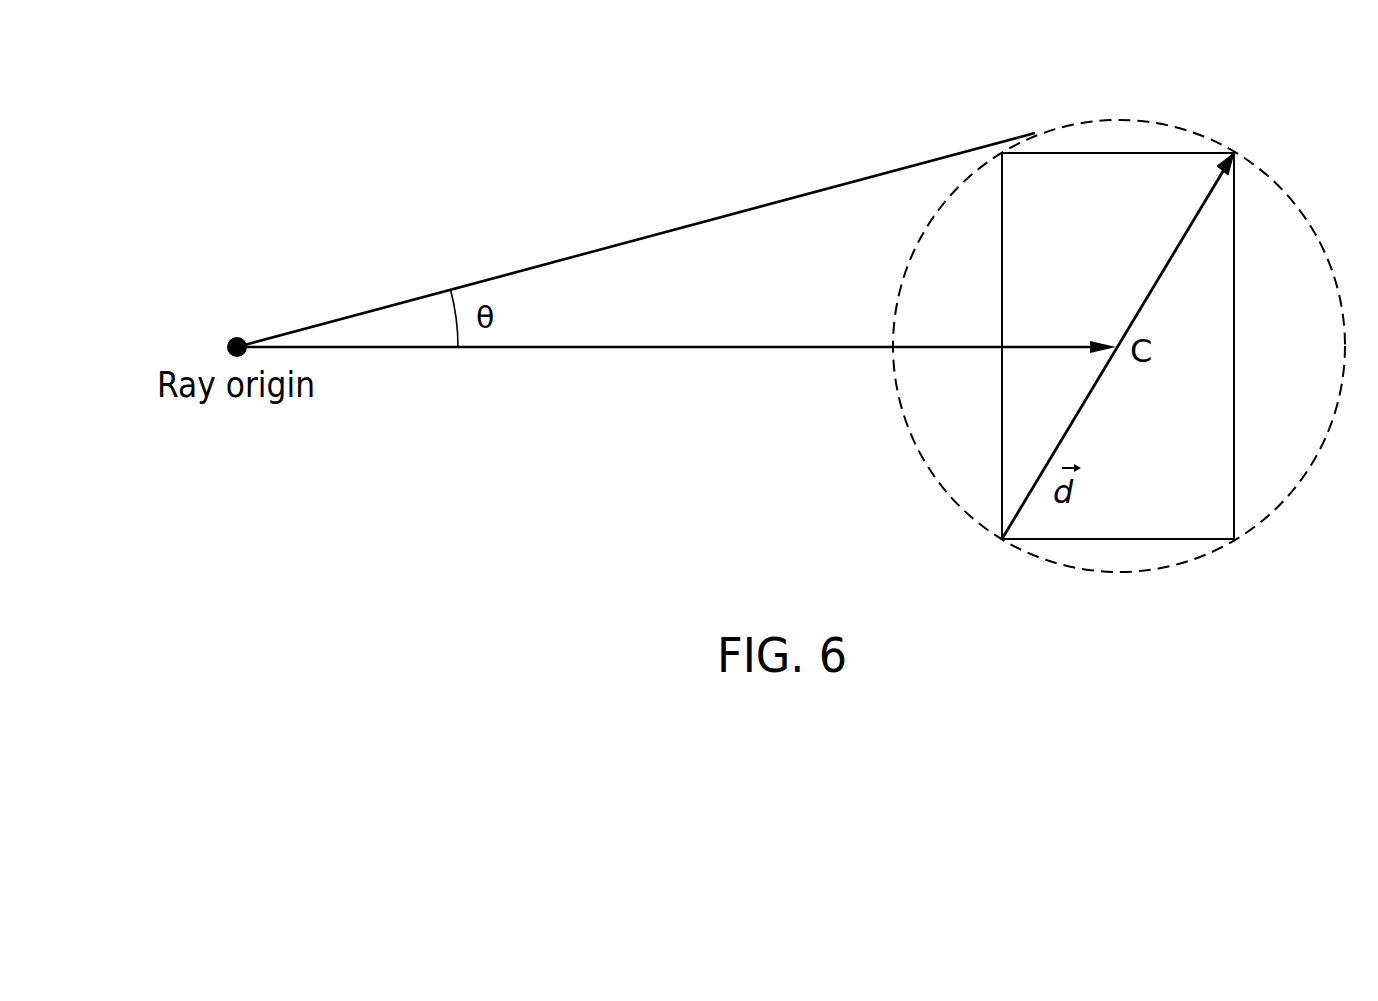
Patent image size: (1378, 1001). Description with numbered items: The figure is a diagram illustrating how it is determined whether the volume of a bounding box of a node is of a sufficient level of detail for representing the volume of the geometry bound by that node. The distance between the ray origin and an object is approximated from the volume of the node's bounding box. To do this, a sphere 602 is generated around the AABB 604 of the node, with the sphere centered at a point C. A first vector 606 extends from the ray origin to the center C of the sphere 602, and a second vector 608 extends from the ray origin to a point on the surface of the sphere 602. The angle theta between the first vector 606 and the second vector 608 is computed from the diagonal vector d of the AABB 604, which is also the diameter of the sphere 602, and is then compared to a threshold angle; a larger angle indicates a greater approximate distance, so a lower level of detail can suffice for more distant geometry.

The sphere 602 is at (1150, 121).
The AABB 604 is at (1118, 346).
The first vector 606 is at (590, 348).
The second vector 608 is at (604, 248).